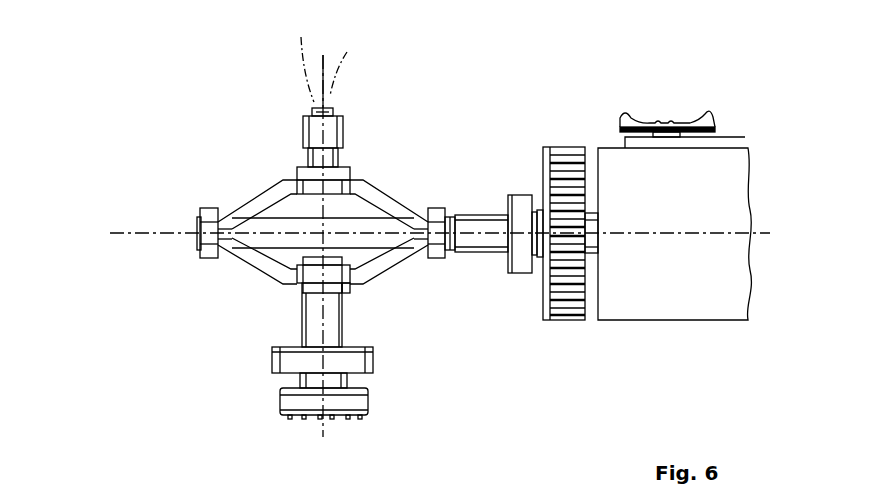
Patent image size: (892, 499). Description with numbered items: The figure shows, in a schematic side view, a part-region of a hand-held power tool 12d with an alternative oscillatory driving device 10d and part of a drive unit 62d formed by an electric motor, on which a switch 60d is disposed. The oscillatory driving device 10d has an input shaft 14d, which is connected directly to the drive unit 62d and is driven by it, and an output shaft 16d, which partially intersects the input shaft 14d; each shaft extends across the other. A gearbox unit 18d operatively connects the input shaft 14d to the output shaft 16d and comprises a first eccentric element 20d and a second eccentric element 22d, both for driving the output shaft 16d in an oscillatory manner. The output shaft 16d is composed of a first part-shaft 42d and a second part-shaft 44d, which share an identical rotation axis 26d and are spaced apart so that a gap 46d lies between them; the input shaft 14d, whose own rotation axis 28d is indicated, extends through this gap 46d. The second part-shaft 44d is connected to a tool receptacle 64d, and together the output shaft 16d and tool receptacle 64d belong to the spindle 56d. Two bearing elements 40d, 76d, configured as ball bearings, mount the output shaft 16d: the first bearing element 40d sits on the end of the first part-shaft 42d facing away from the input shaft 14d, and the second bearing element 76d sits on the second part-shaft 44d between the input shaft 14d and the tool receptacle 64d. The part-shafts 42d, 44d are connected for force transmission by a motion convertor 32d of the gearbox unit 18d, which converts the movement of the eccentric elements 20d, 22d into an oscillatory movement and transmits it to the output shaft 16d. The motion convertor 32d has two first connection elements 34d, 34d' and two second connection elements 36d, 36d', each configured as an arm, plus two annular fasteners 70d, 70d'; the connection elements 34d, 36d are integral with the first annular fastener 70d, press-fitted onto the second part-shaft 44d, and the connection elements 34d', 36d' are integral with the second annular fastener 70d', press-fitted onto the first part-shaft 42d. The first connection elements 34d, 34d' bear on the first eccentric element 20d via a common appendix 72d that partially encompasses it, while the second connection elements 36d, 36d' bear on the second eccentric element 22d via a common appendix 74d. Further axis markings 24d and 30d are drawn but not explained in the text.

The oscillatory driving device 10d is at (462, 76).
The hand-held power tool 12d is at (546, 75).
The input shaft 14d is at (488, 220).
The output shaft 16d is at (360, 327).
The gearbox unit 18d is at (468, 143).
The first eccentric element 20d is at (434, 208).
The second eccentric element 22d is at (208, 257).
The axis 24d is at (356, 62).
The rotation axis 26d is at (290, 57).
The rotation axis 28d is at (123, 233).
The vertical axis 30d is at (325, 228).
The motion convertor 32d is at (232, 302).
The first connection element 34d is at (408, 267).
The first connection element 34d' is at (391, 187).
The second connection element 36d is at (229, 276).
The second connection element 36d' is at (246, 183).
The first bearing element 40d is at (313, 133).
The first part-shaft 42d is at (344, 118).
The second part-shaft 44d is at (313, 317).
The gap 46d is at (337, 252).
The spindle 56d is at (250, 397).
The switch 60d is at (705, 116).
The drive unit 62d is at (700, 300).
The tool receptacle 64d is at (298, 403).
The first annular fastener 70d is at (370, 302).
The second annular fastener 70d' is at (358, 156).
The appendix 72d is at (445, 256).
The appendix 74d is at (200, 222).
The second bearing element 76d is at (283, 362).